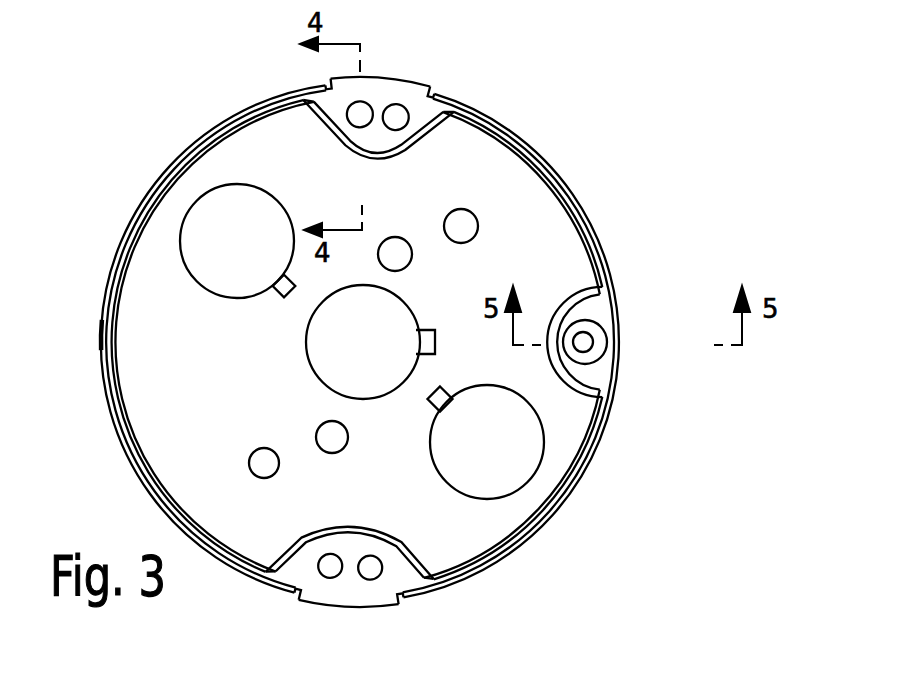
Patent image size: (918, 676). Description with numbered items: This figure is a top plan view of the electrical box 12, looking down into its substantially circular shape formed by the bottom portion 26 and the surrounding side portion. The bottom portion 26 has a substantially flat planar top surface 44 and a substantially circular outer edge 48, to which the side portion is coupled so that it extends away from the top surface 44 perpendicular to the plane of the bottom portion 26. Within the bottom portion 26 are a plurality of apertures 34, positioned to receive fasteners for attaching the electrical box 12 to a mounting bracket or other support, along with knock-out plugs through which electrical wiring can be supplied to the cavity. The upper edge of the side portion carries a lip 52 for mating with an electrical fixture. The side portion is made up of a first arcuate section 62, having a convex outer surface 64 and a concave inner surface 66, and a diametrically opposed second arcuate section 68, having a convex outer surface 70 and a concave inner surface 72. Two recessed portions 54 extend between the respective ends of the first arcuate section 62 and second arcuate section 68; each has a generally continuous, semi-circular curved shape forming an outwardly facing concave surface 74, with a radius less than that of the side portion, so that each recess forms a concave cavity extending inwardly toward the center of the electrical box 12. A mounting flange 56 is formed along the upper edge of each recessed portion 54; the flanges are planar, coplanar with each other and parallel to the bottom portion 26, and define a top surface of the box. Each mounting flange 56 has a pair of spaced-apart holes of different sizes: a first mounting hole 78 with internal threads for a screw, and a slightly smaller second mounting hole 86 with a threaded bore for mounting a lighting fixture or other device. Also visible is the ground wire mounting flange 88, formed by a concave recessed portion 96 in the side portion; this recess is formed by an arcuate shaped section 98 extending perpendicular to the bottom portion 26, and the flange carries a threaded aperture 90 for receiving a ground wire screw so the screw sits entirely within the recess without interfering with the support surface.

The electrical box 12 is at (550, 146).
The bottom portion 26 is at (574, 449).
The apertures 34 is at (400, 248).
The top surface 44 is at (497, 541).
The outer edge 48 is at (168, 488).
The lip 52 is at (569, 512).
The recessed portions 54 is at (392, 73).
The mounting flange 56 is at (408, 102).
The first arcuate section 62 is at (100, 349).
The convex outer surface 64 is at (101, 322).
The concave inner surface 66 is at (117, 337).
The second arcuate section 68 is at (608, 249).
The convex outer surface 70 is at (595, 219).
The concave inner surface 72 is at (566, 212).
The outwardly facing concave surface 74 is at (322, 558).
The first mounting hole 78 is at (372, 563).
The second mounting hole 86 is at (331, 562).
The ground wire mounting flange 88 is at (600, 348).
The threaded aperture 90 is at (593, 337).
The concave recessed portion 96 is at (628, 331).
The arcuate shaped section 98 is at (590, 362).